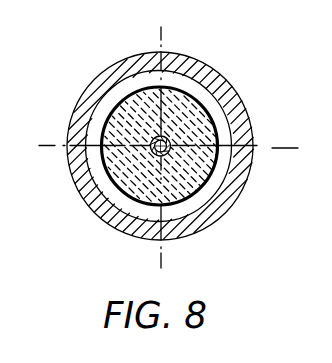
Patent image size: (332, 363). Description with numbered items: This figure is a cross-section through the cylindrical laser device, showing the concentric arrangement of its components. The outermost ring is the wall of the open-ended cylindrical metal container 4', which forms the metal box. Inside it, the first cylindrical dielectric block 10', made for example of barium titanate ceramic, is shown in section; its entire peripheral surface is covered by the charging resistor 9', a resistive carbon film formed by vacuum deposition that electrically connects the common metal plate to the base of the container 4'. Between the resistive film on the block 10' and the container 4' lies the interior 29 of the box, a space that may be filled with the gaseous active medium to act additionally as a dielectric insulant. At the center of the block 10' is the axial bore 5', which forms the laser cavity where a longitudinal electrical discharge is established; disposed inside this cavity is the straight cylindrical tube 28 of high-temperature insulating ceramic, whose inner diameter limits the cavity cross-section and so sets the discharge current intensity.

The straight cylindrical tube 28 is at (152, 136).
The charging resistor 9' is at (167, 114).
The open-ended cylindrical container 4' is at (174, 146).
The bore forming the laser cavity 5' is at (218, 123).
The first cylindrical dielectric block 10' is at (187, 146).
The interior of the box 29 is at (223, 173).